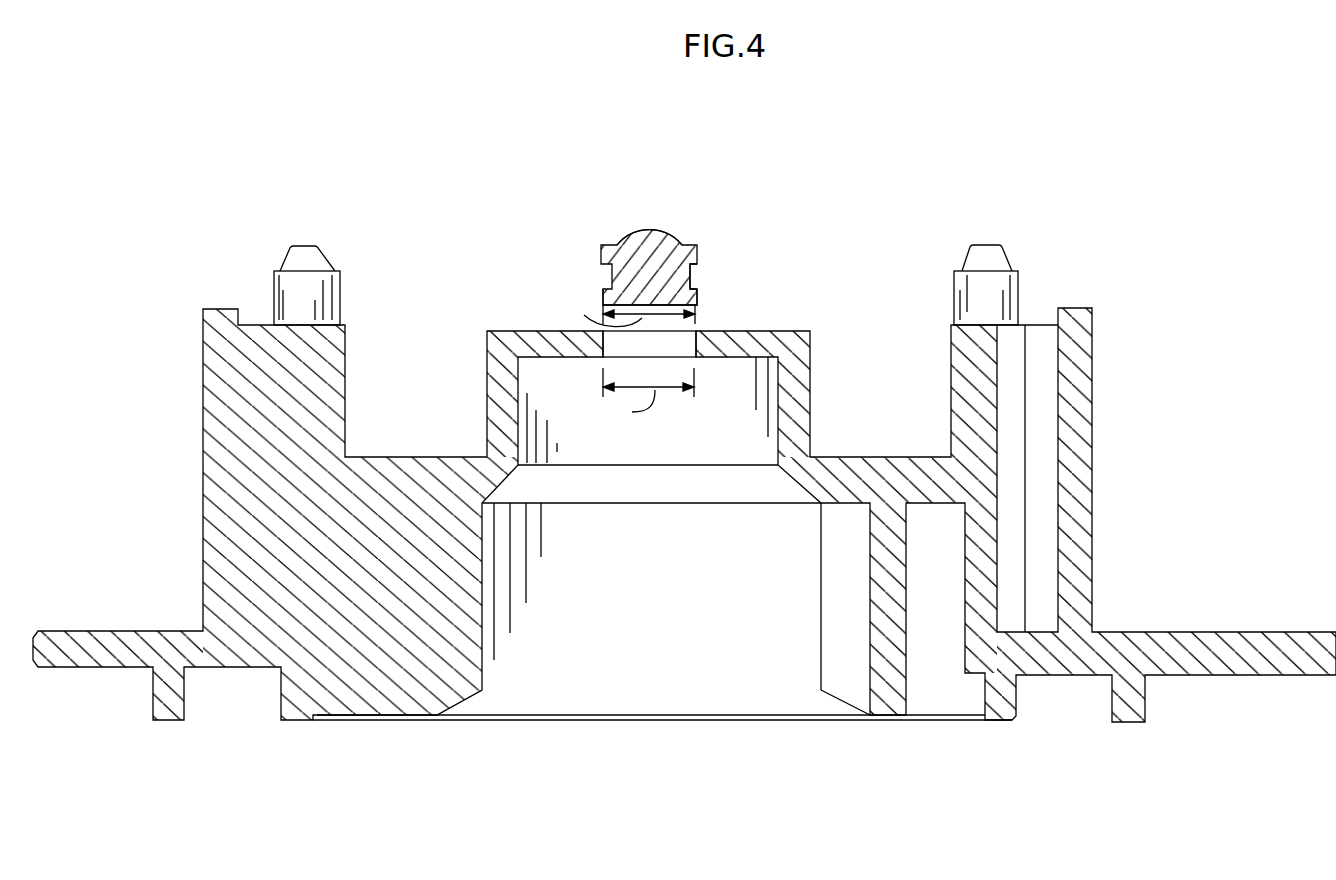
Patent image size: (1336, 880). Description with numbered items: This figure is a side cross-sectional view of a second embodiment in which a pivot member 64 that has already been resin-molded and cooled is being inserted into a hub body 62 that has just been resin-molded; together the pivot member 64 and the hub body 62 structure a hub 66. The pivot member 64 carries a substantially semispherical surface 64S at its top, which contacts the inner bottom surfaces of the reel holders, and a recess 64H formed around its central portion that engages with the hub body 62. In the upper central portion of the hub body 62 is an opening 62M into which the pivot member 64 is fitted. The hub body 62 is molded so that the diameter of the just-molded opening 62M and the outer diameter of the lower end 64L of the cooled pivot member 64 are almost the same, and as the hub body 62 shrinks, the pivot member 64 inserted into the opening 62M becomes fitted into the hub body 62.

The hub body 62 is at (1078, 342).
The opening 62M is at (603, 341).
The pivot member 64 is at (672, 253).
The substantially semispherical surface 64S is at (632, 229).
The recess 64H is at (697, 275).
The lower end 64L is at (698, 295).
The hub 66 is at (1153, 213).